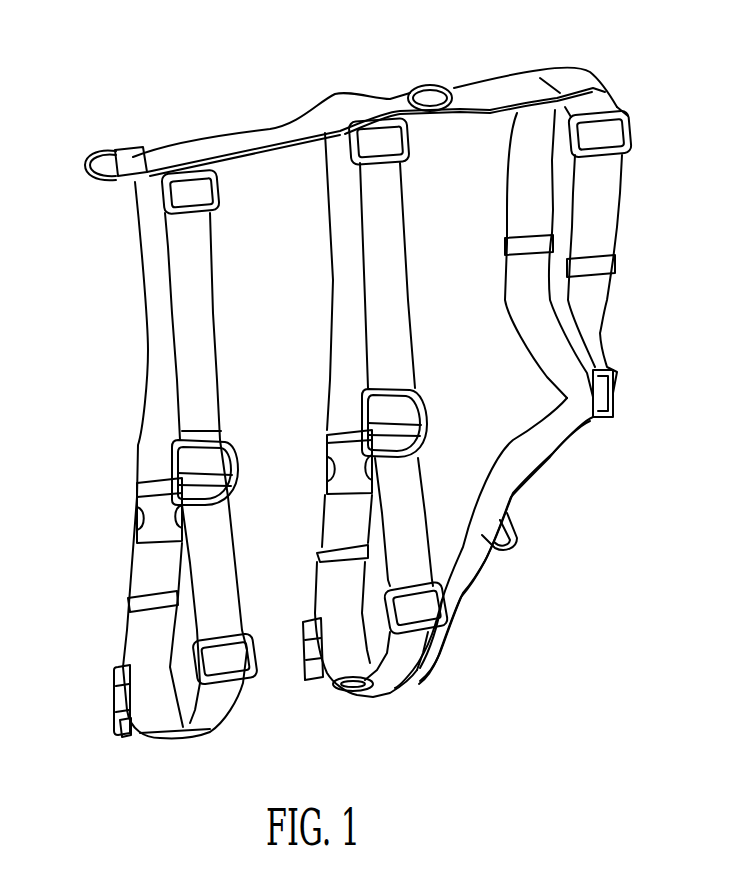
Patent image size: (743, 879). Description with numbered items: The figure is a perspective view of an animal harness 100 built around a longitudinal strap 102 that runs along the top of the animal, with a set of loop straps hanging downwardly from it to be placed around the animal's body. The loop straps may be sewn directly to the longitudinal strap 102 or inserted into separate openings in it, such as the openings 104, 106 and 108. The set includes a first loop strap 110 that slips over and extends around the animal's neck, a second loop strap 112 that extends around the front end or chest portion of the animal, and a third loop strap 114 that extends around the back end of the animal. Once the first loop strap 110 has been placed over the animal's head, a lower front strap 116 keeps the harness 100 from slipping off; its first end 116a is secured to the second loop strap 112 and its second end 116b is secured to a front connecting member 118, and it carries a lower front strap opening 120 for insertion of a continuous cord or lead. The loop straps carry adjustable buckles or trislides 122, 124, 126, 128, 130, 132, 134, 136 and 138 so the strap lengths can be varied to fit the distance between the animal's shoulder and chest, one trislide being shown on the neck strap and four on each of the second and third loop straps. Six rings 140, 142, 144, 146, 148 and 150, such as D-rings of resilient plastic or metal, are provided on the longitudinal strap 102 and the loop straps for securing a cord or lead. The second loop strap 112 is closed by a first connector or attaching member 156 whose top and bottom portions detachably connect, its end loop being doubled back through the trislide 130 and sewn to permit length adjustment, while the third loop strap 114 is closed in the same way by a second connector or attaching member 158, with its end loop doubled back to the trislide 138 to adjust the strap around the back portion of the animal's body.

The animal harness 100 is at (515, 51).
The longitudinal strap 102 is at (272, 128).
The opening 104 is at (601, 97).
The opening 106 is at (413, 120).
The opening 108 is at (228, 174).
The first loop strap 110 is at (603, 205).
The second loop strap 112 is at (388, 292).
The third loop strap 114 is at (200, 355).
The lower front strap 116 is at (492, 497).
The first end 116a is at (440, 645).
The second end 116b is at (573, 435).
The front connecting member 118 is at (613, 405).
The lower front strap opening 120 is at (513, 537).
The trislide 122 is at (630, 148).
The trislide 124 is at (410, 160).
The trislide 126 is at (420, 390).
The trislide 128 is at (446, 625).
The trislide 130 is at (306, 625).
The trislide 132 is at (220, 212).
The trislide 134 is at (235, 440).
The trislide 136 is at (255, 676).
The trislide 138 is at (112, 690).
The ring 140 is at (432, 86).
The ring 142 is at (88, 157).
The ring 144 is at (420, 431).
The ring 146 is at (314, 700).
The ring 148 is at (240, 490).
The ring 150 is at (124, 732).
The first connector 156 is at (330, 445).
The second connector 158 is at (148, 498).